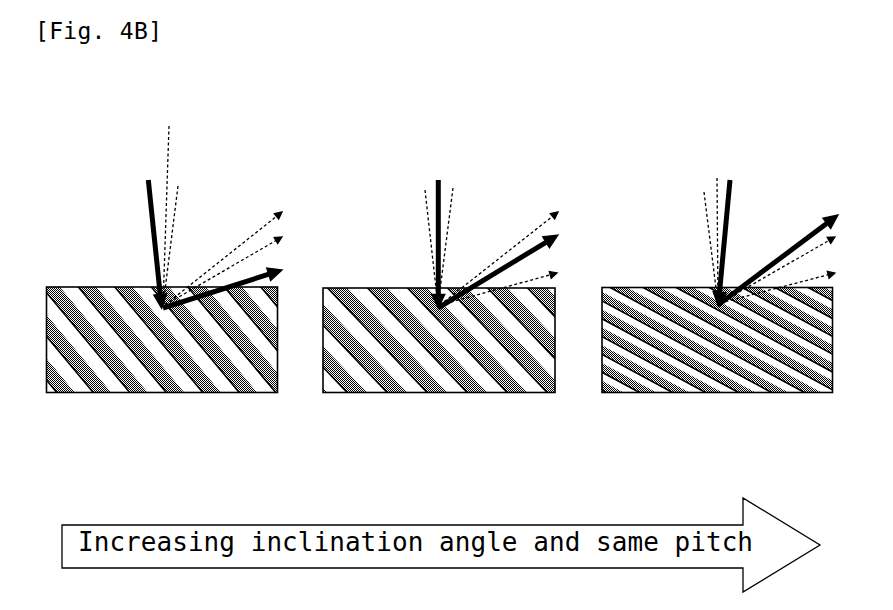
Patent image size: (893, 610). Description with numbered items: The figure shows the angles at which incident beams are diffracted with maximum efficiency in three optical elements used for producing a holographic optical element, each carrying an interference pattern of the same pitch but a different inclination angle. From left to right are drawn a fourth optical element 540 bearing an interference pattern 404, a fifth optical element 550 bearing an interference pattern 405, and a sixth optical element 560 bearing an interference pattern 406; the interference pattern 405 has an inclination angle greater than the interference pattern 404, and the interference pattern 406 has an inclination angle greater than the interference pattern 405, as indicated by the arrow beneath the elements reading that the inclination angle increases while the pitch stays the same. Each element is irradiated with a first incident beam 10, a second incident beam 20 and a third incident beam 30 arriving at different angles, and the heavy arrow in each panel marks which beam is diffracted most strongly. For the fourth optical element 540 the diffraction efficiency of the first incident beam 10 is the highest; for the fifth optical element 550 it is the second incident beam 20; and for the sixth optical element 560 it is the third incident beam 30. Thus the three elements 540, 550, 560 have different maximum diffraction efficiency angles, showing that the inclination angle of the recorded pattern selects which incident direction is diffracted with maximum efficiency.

The first incident beam 10 is at (147, 188).
The second incident beam 20 is at (727, 137).
The third incident beam 30 is at (178, 190).
The interference pattern 404 is at (83, 287).
The interference pattern 405 is at (352, 288).
The interference pattern 406 is at (643, 287).
The fourth optical element 540 is at (50, 393).
The fifth optical element 550 is at (328, 393).
The sixth optical element 560 is at (608, 393).